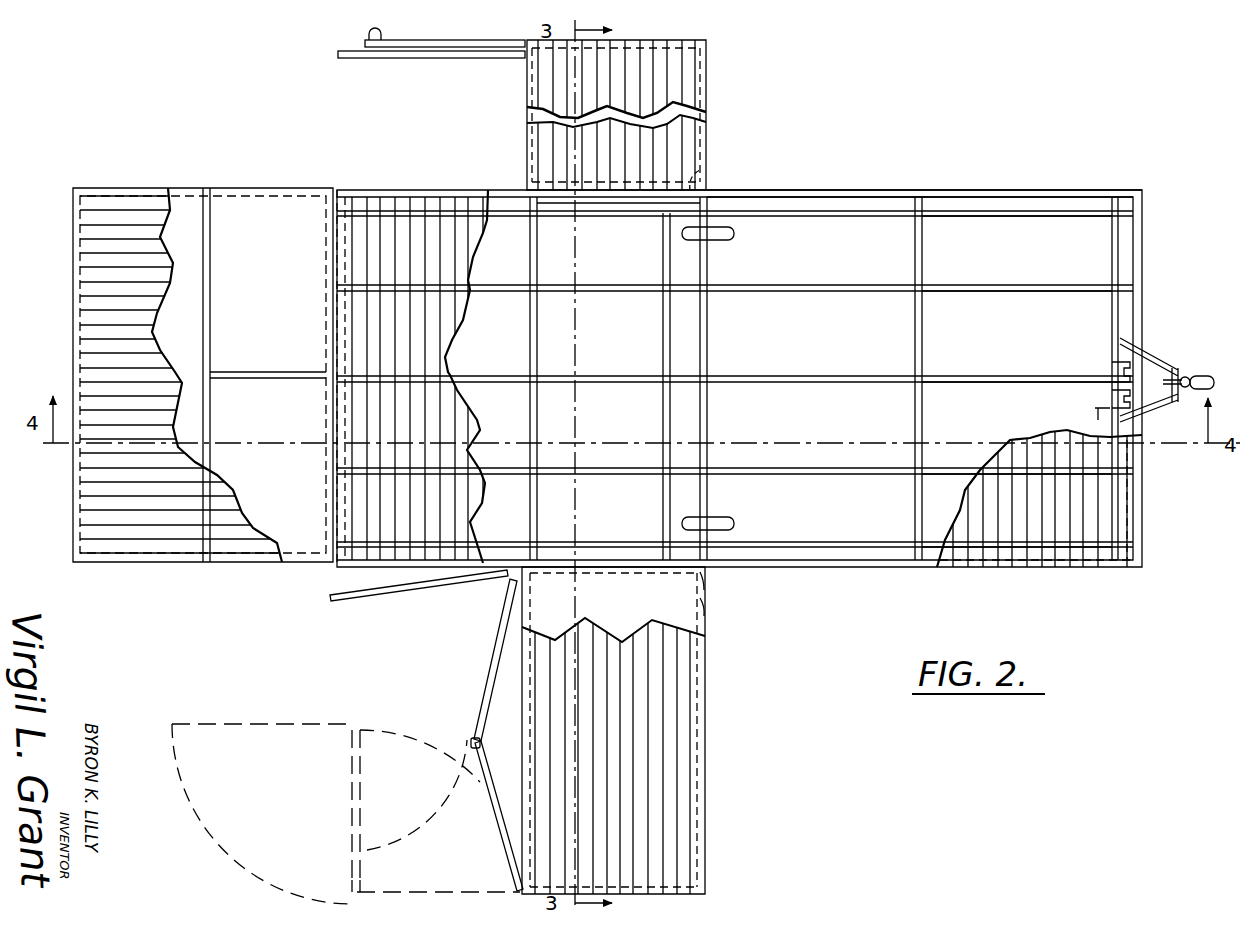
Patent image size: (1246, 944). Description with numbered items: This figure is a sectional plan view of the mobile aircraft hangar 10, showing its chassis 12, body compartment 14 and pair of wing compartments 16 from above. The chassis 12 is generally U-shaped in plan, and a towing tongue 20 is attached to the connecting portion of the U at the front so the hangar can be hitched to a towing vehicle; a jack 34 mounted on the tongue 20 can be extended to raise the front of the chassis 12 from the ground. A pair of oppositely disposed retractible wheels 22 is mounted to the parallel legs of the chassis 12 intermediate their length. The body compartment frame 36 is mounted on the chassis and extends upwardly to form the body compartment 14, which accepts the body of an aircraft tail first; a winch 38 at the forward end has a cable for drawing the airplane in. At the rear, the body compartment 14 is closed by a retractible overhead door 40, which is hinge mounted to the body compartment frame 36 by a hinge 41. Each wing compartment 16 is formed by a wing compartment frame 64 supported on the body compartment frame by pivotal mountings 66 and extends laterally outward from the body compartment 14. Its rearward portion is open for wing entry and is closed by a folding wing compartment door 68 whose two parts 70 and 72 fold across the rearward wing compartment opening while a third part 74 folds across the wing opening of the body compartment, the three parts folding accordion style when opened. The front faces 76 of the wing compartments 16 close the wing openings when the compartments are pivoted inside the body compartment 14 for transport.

The mobile aircraft hangar 10 is at (1012, 188).
The chassis 12 is at (840, 530).
The body compartment 14 is at (808, 345).
The wing compartments 16 is at (712, 70).
The towing tongue 20 is at (1155, 358).
The retractible wheels 22 is at (722, 242).
The jack 34 is at (1188, 378).
The body compartment frame 36 is at (828, 190).
The winch 38 is at (1112, 365).
The retractible overhead door 40 is at (75, 326).
The hinge 41 is at (332, 276).
The wing compartment frame 64 is at (528, 138).
The pivotal mountings 66 is at (698, 175).
The folding wing compartment doors 68 is at (336, 50).
The first door part 70 is at (364, 42).
The second door part 72 is at (498, 55).
The third door part 74 is at (372, 58).
The front faces 76 is at (708, 100).